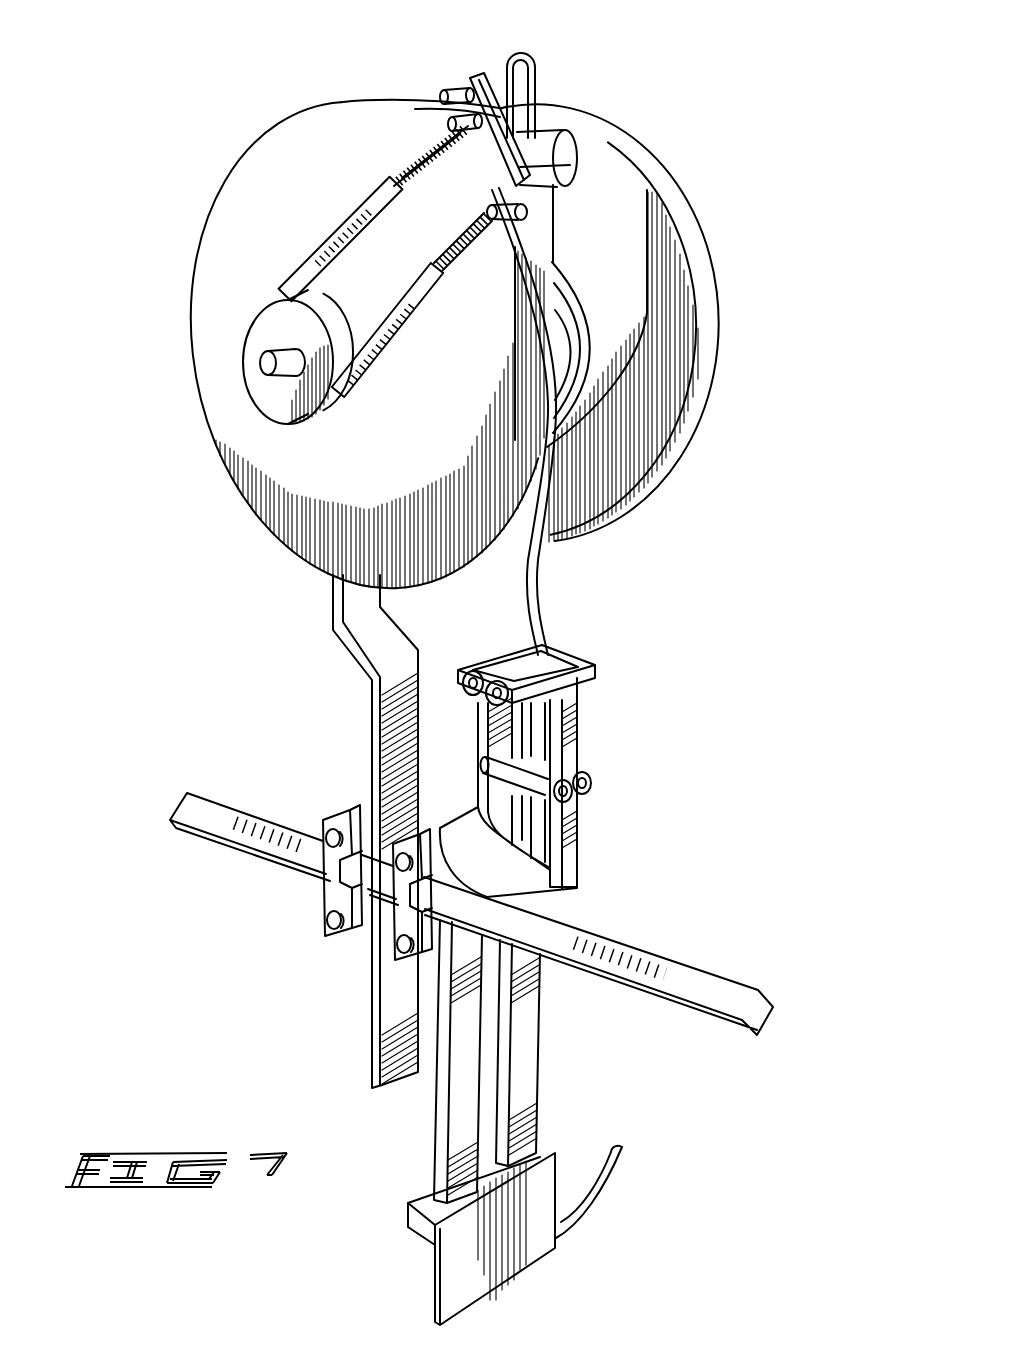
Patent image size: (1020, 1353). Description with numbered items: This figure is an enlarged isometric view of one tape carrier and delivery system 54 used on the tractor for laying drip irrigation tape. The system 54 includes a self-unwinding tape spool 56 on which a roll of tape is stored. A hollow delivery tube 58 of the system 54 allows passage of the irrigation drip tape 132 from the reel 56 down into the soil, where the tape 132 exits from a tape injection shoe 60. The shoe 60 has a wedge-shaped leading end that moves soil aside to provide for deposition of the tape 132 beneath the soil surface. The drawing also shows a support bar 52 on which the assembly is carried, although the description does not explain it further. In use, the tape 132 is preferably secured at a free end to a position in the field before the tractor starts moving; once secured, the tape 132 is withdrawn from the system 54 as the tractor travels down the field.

The tape carrier and delivery system 54 is at (673, 97).
The self-unwinding tape spool 56 is at (645, 508).
The support bar 52 is at (635, 950).
The hollow delivery tube 58 is at (545, 1073).
The tape injection shoe 60 is at (530, 1272).
The irrigation drip tape 132 is at (603, 1202).